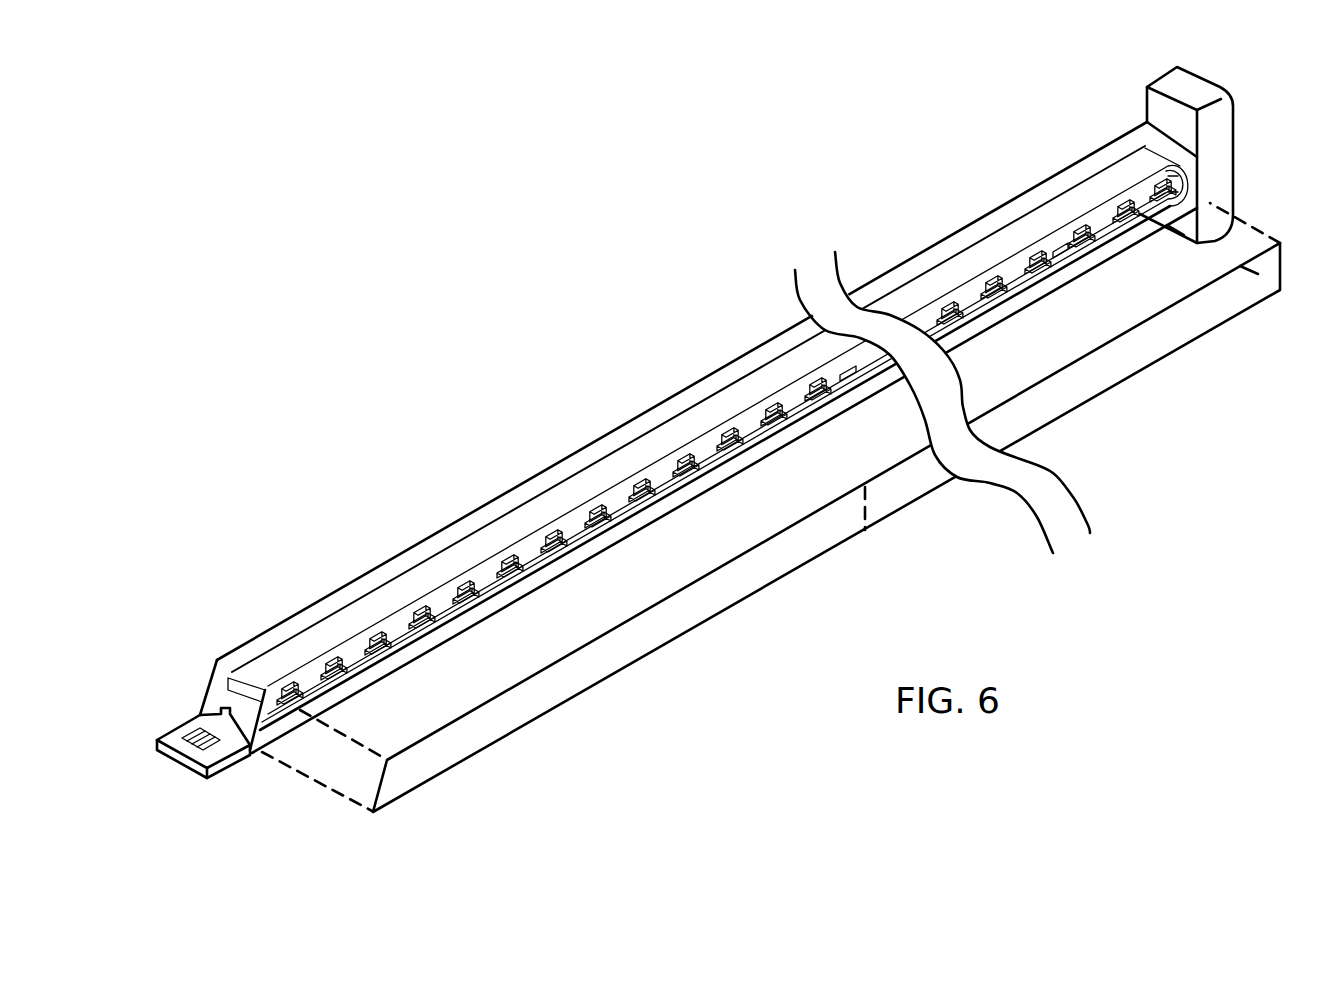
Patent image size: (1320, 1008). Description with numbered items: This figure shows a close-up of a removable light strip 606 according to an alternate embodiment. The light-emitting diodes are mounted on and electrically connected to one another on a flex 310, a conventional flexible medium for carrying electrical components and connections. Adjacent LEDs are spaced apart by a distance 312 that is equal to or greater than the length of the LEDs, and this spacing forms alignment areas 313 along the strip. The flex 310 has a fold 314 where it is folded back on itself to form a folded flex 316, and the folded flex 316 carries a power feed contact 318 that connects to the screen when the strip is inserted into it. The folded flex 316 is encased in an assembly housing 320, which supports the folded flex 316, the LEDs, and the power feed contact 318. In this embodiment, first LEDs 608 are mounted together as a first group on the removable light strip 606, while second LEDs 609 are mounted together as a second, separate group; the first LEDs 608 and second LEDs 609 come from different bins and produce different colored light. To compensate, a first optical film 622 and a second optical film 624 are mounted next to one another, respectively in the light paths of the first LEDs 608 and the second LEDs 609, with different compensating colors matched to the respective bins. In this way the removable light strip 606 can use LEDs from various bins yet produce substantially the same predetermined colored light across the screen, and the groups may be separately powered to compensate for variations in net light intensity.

The removable light strip 606 is at (216, 226).
The flex 310 is at (603, 477).
The distance 312 is at (741, 483).
The alignment areas 313 is at (402, 612).
The fold 314 is at (1187, 148).
The folded flex 316 is at (1200, 173).
The power feed contact 318 is at (217, 748).
The assembly housing 320 is at (487, 618).
The first LEDs 608 is at (750, 430).
The second LEDs 609 is at (808, 380).
The first optical film 622 is at (800, 566).
The second optical film 624 is at (1090, 403).